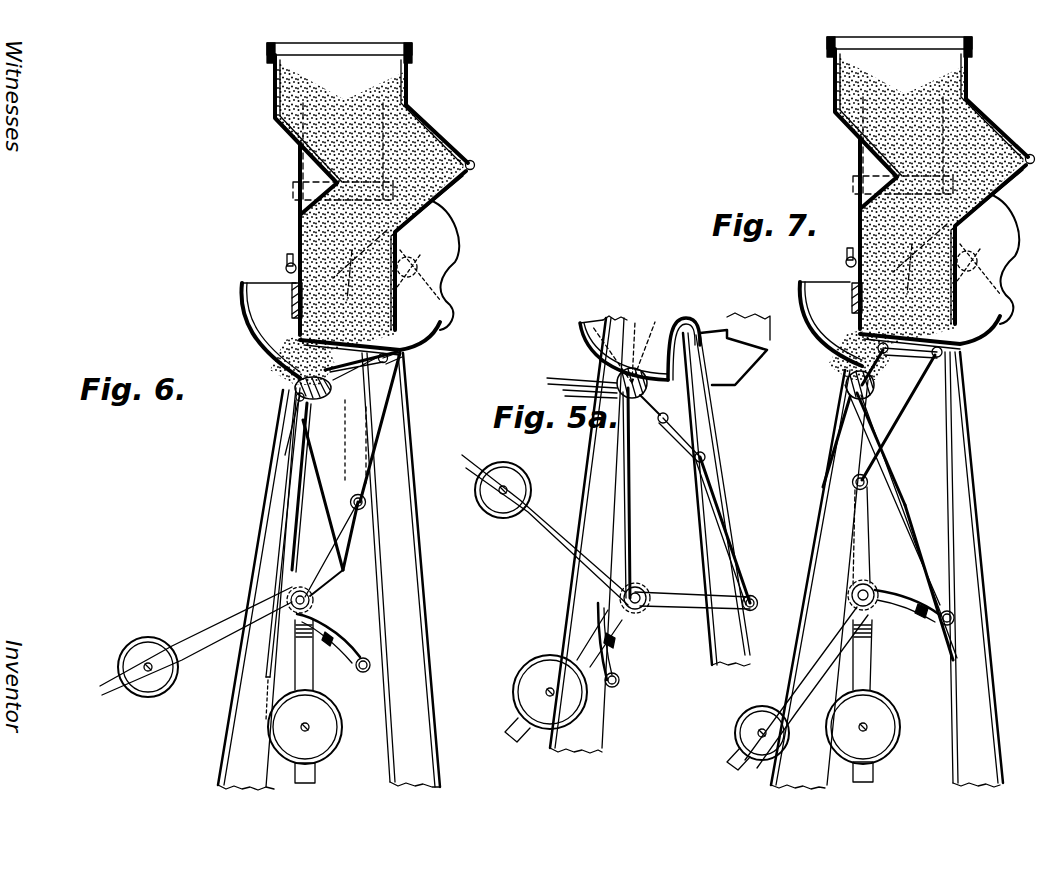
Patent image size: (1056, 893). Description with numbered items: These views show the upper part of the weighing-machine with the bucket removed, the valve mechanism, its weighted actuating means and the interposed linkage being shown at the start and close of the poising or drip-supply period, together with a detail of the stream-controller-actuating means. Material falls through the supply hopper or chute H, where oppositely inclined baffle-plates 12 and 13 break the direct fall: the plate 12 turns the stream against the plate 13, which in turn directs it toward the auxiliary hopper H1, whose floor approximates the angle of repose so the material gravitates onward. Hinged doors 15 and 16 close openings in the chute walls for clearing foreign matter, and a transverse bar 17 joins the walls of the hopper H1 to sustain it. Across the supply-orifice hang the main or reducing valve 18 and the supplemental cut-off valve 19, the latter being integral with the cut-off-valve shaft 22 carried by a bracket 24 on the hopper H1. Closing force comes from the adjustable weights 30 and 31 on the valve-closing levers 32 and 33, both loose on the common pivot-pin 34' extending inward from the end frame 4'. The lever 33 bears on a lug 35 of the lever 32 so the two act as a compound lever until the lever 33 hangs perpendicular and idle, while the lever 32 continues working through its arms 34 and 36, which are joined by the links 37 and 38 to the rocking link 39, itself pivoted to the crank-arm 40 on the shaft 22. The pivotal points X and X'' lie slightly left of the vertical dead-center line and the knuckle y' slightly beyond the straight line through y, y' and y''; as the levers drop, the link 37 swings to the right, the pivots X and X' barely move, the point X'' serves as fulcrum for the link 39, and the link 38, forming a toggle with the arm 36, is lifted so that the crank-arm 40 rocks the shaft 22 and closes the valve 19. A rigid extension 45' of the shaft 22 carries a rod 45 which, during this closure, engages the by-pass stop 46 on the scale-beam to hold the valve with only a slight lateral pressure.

In FIG. 6, the supply hopper or chute H is at (340, 81).
In FIG. 7, the supply hopper or chute H is at (900, 75).
In FIG. 6, the auxiliary hopper H1 is at (243, 322).
In FIG. 5A, the auxiliary hopper H1 is at (596, 323).
In FIG. 7, the auxiliary hopper H1 is at (805, 300).
In FIG. 6, the end frame 4' is at (334, 571).
In FIG. 5A, the end frame 4' is at (650, 534).
In FIG. 7, the end frame 4' is at (887, 570).
In FIG. 6, the baffle-plate 12 is at (298, 150).
In FIG. 7, the baffle-plate 12 is at (858, 152).
In FIG. 6, the baffle-plate 13 is at (445, 203).
In FIG. 7, the baffle-plate 13 is at (1000, 196).
In FIG. 6, the door 15 is at (432, 138).
In FIG. 7, the door 15 is at (988, 130).
In FIG. 6, the door 16 is at (293, 246).
In FIG. 7, the door 16 is at (853, 240).
In FIG. 6, the transverse bar 17 is at (290, 298).
In FIG. 7, the transverse bar 17 is at (850, 294).
In FIG. 6, the main valve 18 is at (435, 288).
In FIG. 5A, the main valve 18 is at (735, 349).
In FIG. 7, the main valve 18 is at (985, 323).
In FIG. 6, the cut-off valve 19 is at (322, 393).
In FIG. 5A, the cut-off valve 19 is at (640, 400).
In FIG. 7, the cut-off valve 19 is at (876, 380).
In FIG. 6, the cut-off-valve shaft 22 is at (309, 415).
In FIG. 5A, the cut-off-valve shaft 22 is at (632, 370).
In FIG. 7, the cut-off-valve shaft 22 is at (848, 397).
In FIG. 5A, the bracket 24 is at (612, 372).
In FIG. 6, the weight 30 is at (149, 640).
In FIG. 5A, the weight 30 is at (530, 483).
In FIG. 7, the weight 30 is at (745, 720).
In FIG. 6, the weight 31 is at (340, 740).
In FIG. 5A, the weight 31 is at (520, 688).
In FIG. 7, the weight 31 is at (895, 720).
In FIG. 6, the valve-closing lever 32 is at (196, 641).
In FIG. 5A, the valve-closing lever 32 is at (548, 528).
In FIG. 7, the valve-closing lever 32 is at (807, 670).
In FIG. 6, the valve-closing lever 33 is at (315, 677).
In FIG. 5A, the valve-closing lever 33 is at (582, 650).
In FIG. 7, the valve-closing lever 33 is at (863, 665).
In FIG. 6, the lever-arm 34 is at (354, 638).
In FIG. 5A, the lever-arm 34 is at (624, 645).
In FIG. 7, the lever-arm 34 is at (921, 593).
In FIG. 6, the pivot-pin 34' is at (337, 582).
In FIG. 5A, the pivot-pin 34' is at (666, 571).
In FIG. 7, the pivot-pin 34' is at (835, 575).
In FIG. 6, the lug 35 is at (332, 637).
In FIG. 5A, the lug 35 is at (618, 640).
In FIG. 7, the lug 35 is at (925, 608).
In FIG. 6, the lever-arm 36 is at (345, 533).
In FIG. 5A, the lever-arm 36 is at (686, 602).
In FIG. 7, the lever-arm 36 is at (863, 523).
In FIG. 6, the link 37 is at (317, 495).
In FIG. 5A, the link 37 is at (625, 500).
In FIG. 7, the link 37 is at (904, 470).
In FIG. 6, the link 38 is at (372, 432).
In FIG. 5A, the link 38 is at (720, 510).
In FIG. 7, the link 38 is at (913, 403).
In FIG. 6, the rocking link 39 is at (388, 365).
In FIG. 5A, the rocking link 39 is at (688, 432).
In FIG. 7, the rocking link 39 is at (937, 367).
In FIG. 6, the crank-arm 40 is at (295, 383).
In FIG. 5A, the crank-arm 40 is at (642, 385).
In FIG. 7, the crank-arm 40 is at (845, 376).
In FIG. 6, the rod 45 is at (261, 532).
In FIG. 5A, the rod 45 is at (563, 373).
In FIG. 7, the rod 45 is at (910, 527).
In FIG. 6, the rigid extension 45' is at (269, 427).
In FIG. 5A, the rigid extension 45' is at (565, 395).
In FIG. 7, the rigid extension 45' is at (897, 495).
In FIG. 6, the by-pass stop 46 is at (267, 682).
In FIG. 6, the pivotal point X is at (363, 678).
In FIG. 5A, the pivotal point X is at (616, 691).
In FIG. 7, the pivotal point X is at (954, 627).
In FIG. 6, the pivotal point X' is at (267, 592).
In FIG. 5A, the pivotal point X' is at (635, 588).
In FIG. 7, the pivotal point X' is at (871, 588).
In FIG. 6, the pivotal point X'' is at (271, 408).
In FIG. 5A, the pivotal point X'' is at (612, 411).
In FIG. 7, the pivotal point X'' is at (810, 354).
In FIG. 6, the pivotal point y is at (372, 501).
In FIG. 5A, the pivotal point y is at (763, 603).
In FIG. 7, the pivotal point y is at (848, 481).
In FIG. 6, the pivotal point y' is at (417, 315).
In FIG. 5A, the pivotal point y' is at (710, 445).
In FIG. 7, the pivotal point y' is at (958, 352).
In FIG. 6, the pivotal point y'' is at (407, 378).
In FIG. 5A, the pivotal point y'' is at (671, 405).
In FIG. 7, the pivotal point y'' is at (853, 333).